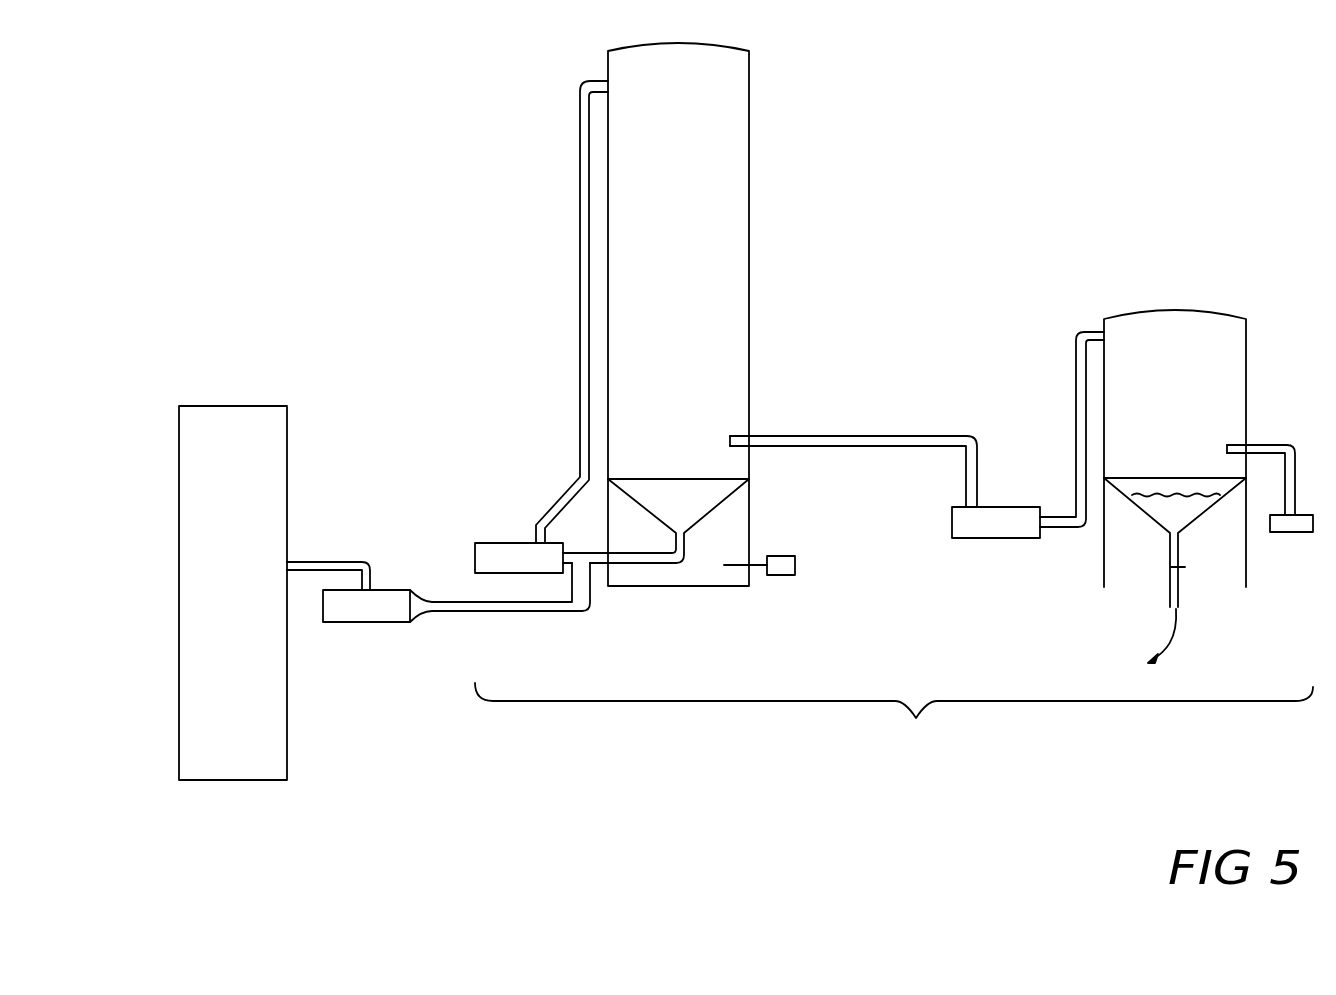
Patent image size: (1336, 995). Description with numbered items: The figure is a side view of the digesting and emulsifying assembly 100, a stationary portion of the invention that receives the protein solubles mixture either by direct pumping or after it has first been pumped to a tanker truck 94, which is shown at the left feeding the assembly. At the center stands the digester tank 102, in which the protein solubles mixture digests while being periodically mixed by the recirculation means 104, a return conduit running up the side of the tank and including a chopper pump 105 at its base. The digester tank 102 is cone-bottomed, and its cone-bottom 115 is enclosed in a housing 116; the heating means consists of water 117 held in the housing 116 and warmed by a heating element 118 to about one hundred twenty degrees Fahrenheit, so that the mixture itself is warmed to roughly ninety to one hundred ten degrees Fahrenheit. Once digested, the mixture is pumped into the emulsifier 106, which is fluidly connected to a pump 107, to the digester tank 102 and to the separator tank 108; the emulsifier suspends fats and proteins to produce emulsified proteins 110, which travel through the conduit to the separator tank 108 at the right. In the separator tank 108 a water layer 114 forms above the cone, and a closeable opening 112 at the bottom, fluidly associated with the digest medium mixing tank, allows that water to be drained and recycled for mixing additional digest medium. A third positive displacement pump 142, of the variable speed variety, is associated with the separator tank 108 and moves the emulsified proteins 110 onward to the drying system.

The tanker truck 94 is at (225, 406).
The digesting and emulsifying assembly 100 is at (908, 749).
The digester tank 102 is at (749, 133).
The recirculation means 104 is at (580, 256).
The chopper pump 105 is at (496, 542).
The emulsifier 106 is at (979, 538).
The pump 107 is at (990, 649).
The separator tank 108 is at (1193, 309).
The emulsified proteins 110 is at (1076, 368).
The closeable opening 112 is at (1180, 585).
The water layer 114 is at (1153, 498).
The cone-bottom 115 is at (647, 513).
The housing 116 is at (608, 535).
The water 117 is at (693, 565).
The heating element 118 is at (775, 575).
The third positive displacement pump 142 is at (1300, 532).